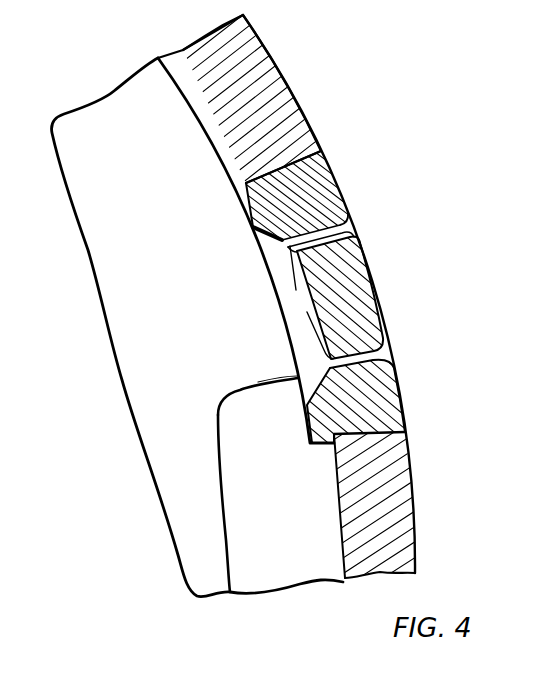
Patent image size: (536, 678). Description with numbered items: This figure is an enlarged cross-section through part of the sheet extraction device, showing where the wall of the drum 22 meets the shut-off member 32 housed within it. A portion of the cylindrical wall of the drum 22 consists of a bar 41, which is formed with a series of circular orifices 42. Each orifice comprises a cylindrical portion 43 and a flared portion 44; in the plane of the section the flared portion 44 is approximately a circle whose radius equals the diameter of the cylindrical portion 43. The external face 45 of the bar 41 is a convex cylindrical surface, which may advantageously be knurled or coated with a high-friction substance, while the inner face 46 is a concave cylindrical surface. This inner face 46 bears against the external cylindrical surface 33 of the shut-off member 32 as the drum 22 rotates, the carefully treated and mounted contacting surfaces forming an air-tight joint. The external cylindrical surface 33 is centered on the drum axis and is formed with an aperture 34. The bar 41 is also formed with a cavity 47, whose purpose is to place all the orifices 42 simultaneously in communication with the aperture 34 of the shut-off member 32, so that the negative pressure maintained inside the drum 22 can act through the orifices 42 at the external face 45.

The drum 22 is at (397, 482).
The shut-off member 32 is at (97, 115).
The external cylindrical surface 33 is at (210, 144).
The aperture 34 is at (228, 500).
The bar 41 is at (385, 399).
The circular orifices 42 is at (309, 302).
The cylindrical portion 43 is at (345, 221).
The flared portion 44 is at (350, 232).
The external face 45 is at (378, 297).
The inner face 46 is at (300, 390).
The cavity 47 is at (292, 313).